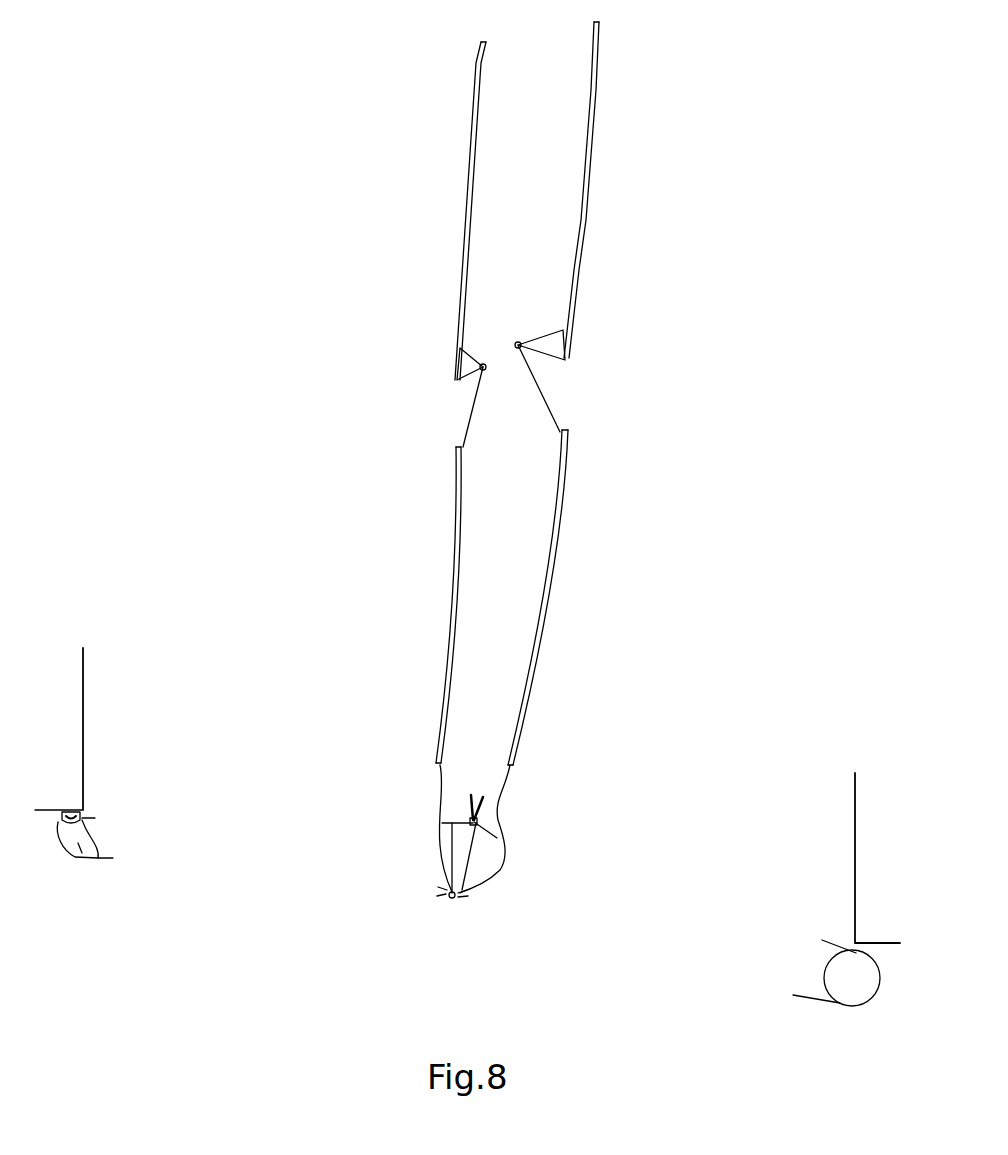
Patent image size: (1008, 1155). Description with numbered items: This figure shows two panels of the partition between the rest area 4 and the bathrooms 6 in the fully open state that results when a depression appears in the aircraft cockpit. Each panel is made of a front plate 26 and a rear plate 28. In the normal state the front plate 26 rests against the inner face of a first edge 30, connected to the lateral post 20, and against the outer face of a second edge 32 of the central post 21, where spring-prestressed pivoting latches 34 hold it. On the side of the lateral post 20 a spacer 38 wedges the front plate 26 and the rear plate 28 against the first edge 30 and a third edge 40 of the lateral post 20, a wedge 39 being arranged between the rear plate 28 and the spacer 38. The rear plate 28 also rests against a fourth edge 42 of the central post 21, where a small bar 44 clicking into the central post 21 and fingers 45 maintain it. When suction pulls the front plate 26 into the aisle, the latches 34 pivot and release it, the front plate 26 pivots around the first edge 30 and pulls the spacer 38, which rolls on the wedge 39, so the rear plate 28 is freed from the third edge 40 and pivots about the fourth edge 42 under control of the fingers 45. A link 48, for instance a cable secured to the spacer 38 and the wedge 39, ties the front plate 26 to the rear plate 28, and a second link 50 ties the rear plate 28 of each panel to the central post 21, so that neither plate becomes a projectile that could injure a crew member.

The rest area 4 is at (870, 820).
The bathrooms 6 is at (65, 716).
The lateral post 20 is at (73, 857).
The central post 21 is at (460, 857).
The front plate 26 is at (584, 178).
The rear plate 28 is at (457, 568).
The first edge 30 is at (90, 815).
The second edge 32 is at (497, 838).
The pivoting latch 34 is at (470, 800).
The spacer 38 is at (470, 357).
The wedge 39 is at (560, 433).
The third edge 40 is at (108, 863).
The fourth edge 42 is at (463, 892).
The small bar 44 is at (447, 895).
The fingers 45 is at (505, 753).
The link 48 is at (465, 414).
The second link 50 is at (441, 787).